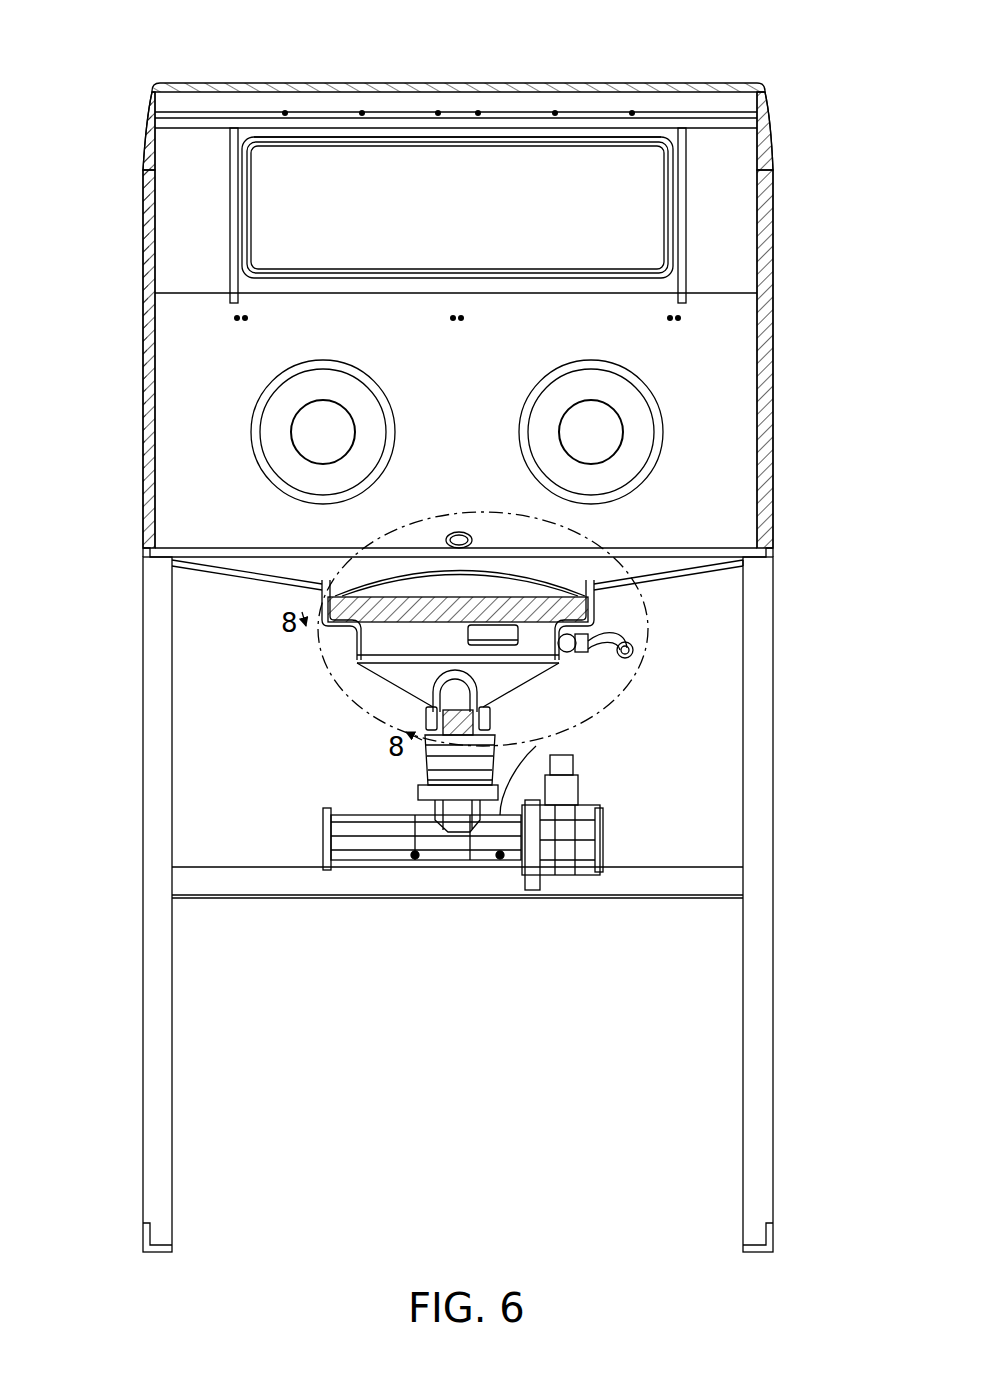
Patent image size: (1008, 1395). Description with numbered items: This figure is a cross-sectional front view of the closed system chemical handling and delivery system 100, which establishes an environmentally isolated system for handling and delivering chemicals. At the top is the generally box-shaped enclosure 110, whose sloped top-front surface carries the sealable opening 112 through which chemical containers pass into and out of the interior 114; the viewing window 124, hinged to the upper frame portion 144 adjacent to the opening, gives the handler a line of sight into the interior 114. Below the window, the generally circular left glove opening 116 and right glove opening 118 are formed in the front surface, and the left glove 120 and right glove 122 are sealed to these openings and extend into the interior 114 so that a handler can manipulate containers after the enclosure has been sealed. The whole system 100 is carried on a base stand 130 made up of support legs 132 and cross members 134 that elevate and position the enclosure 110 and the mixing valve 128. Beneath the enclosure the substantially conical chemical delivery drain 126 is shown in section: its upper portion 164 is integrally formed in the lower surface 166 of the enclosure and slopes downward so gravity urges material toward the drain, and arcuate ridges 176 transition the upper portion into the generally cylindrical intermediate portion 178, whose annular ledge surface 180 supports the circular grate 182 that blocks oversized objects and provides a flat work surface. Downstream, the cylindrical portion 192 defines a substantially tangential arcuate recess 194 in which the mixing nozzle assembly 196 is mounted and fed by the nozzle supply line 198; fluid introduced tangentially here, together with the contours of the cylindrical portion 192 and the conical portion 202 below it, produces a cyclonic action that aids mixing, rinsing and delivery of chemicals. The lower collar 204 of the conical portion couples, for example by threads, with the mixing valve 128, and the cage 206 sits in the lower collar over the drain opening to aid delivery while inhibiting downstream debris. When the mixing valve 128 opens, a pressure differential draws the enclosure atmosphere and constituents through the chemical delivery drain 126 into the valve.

The closed system chemical handling and delivery system 100 is at (802, 124).
The enclosure 110 is at (774, 316).
The sealable opening 112 is at (676, 250).
The interior 114 is at (477, 385).
The left glove opening 116 is at (650, 397).
The right glove opening 118 is at (276, 388).
The left glove 120 is at (618, 452).
The right glove 122 is at (306, 462).
The viewing window 124 is at (477, 218).
The chemical delivery drain 126 is at (356, 690).
The mixing valve 128 is at (312, 836).
The base stand 130 is at (117, 1103).
The support legs 132 is at (774, 826).
The cross members 134 is at (650, 898).
The upper frame portion 144 is at (626, 138).
The upper portion 164 is at (575, 566).
The lower surface 166 is at (682, 576).
The arcuate ridges 176 is at (412, 571).
The intermediate portion 178 is at (312, 598).
The annular ledge surface 180 is at (351, 630).
The grate 182 is at (379, 608).
The cylindrical portion 192 is at (371, 651).
The arcuate recess 194 is at (494, 630).
The mixing nozzle assembly 196 is at (574, 656).
The nozzle supply line 198 is at (618, 634).
The conical portion 202 is at (524, 682).
The lower collar 204 is at (498, 733).
The cage 206 is at (452, 708).